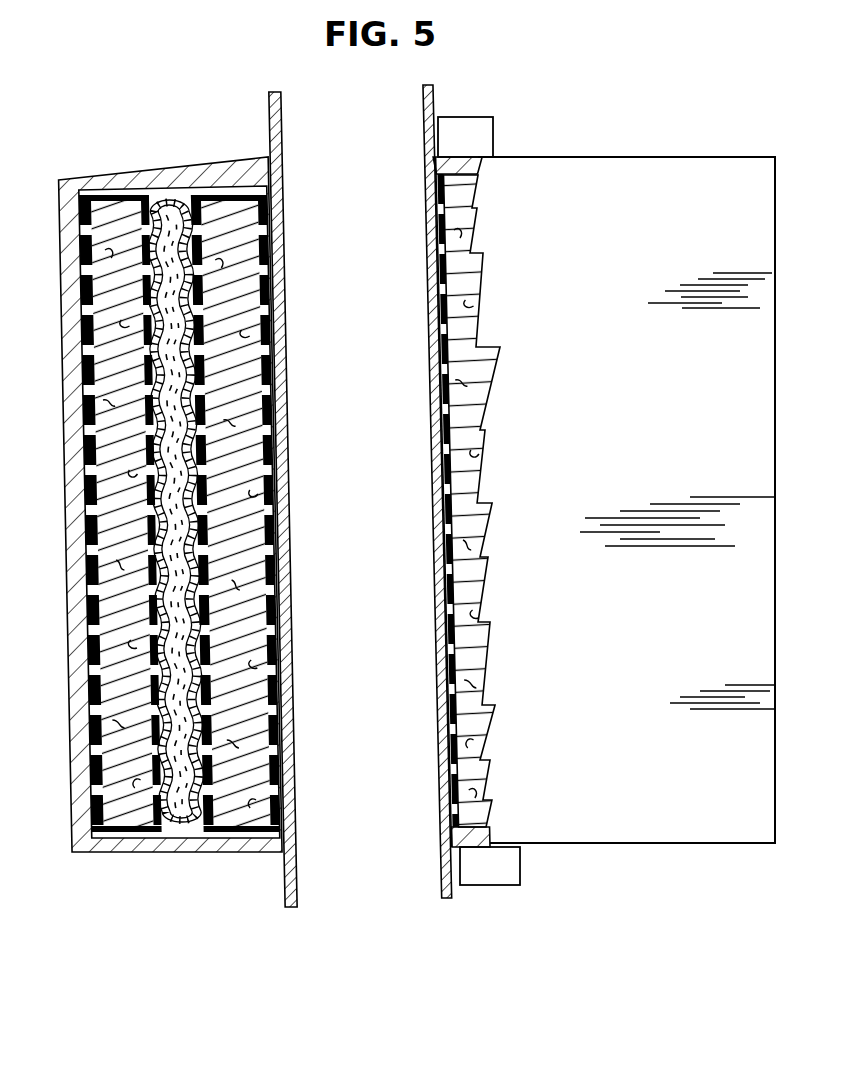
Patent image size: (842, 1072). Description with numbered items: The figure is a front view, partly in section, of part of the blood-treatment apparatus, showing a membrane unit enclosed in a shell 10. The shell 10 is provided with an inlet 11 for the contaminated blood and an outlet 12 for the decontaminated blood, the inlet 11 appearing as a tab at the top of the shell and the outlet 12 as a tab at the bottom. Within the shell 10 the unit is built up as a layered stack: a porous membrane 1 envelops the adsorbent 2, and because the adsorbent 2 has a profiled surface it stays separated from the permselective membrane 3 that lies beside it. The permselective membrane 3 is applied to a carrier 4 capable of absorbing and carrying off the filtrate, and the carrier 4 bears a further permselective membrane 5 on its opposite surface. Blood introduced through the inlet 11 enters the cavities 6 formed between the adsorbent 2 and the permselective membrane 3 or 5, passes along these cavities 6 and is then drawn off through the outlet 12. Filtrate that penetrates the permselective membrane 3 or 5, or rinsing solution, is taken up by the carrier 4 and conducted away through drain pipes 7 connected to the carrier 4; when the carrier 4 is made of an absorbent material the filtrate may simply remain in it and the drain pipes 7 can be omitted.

The porous membrane 1 is at (172, 218).
The adsorbent 2 is at (166, 205).
The permselective membrane 3 is at (290, 556).
The carrier 4 is at (90, 192).
The permselective membrane 5 is at (90, 797).
The cavities 6 is at (152, 190).
The drain pipes 7 is at (280, 112).
The shell 10 is at (197, 170).
The inlet 11 is at (478, 128).
The outlet 12 is at (503, 870).